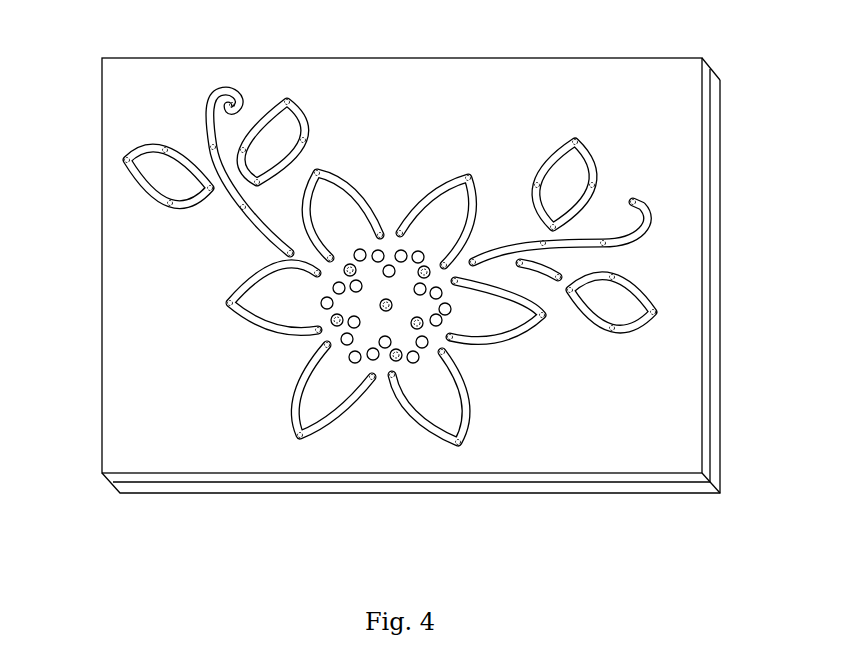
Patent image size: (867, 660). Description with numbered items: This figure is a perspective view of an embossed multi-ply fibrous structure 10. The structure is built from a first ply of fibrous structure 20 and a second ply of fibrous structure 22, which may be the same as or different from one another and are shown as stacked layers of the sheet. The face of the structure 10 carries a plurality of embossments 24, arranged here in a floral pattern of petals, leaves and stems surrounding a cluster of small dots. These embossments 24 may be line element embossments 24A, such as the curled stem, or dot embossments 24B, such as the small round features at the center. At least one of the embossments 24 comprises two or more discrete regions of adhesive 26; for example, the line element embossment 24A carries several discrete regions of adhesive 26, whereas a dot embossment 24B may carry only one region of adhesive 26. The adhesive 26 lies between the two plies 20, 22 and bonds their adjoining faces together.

The embossed multi-ply fibrous structure 10 is at (444, 317).
The first ply of fibrous structure 20 is at (158, 478).
The second ply of fibrous structure 22 is at (218, 488).
The embossments 24 is at (349, 224).
The line element embossment 24A is at (222, 90).
The dot embossment 24B is at (419, 251).
The region of adhesive 26 is at (240, 97).